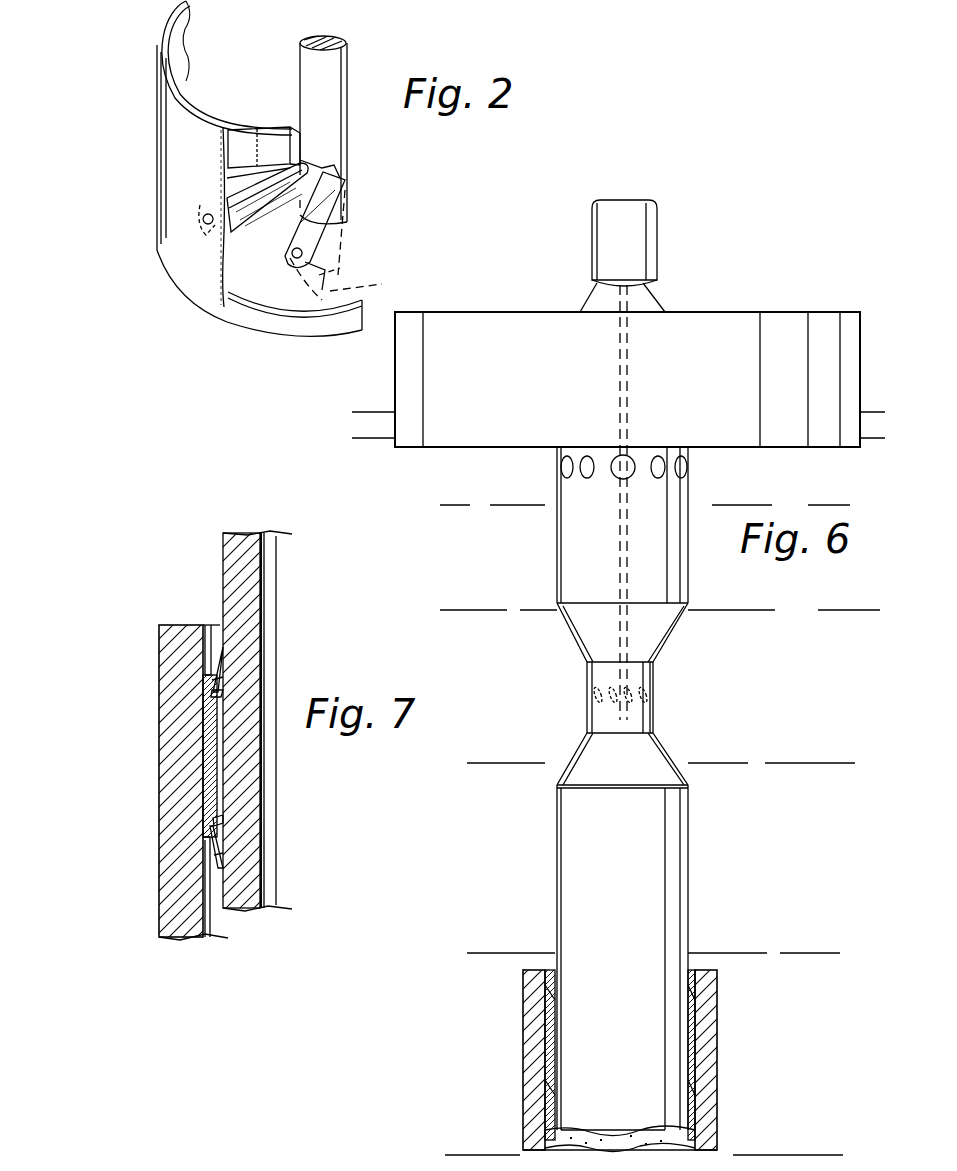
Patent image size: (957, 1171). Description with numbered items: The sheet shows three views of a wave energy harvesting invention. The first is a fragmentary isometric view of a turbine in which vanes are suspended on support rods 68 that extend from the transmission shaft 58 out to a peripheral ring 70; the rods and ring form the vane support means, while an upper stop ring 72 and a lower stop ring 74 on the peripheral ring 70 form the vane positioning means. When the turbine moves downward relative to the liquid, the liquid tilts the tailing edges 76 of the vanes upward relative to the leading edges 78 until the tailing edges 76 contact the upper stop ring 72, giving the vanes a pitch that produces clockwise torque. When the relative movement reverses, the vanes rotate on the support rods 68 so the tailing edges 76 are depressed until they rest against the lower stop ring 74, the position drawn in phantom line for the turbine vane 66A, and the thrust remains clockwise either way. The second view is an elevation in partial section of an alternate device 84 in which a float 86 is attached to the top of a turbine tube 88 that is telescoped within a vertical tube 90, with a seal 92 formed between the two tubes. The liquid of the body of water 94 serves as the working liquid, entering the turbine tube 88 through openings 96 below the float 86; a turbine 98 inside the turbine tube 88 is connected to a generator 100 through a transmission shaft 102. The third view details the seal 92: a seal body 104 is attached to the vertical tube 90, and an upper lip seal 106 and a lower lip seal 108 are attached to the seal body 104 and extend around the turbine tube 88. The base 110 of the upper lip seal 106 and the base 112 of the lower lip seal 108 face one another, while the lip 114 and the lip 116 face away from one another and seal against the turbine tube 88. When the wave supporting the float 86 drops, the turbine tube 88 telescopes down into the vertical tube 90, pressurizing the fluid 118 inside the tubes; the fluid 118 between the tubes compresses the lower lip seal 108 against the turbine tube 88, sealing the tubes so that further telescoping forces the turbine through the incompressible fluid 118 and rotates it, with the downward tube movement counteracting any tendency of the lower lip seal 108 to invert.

In FIG. 2, the transmission shaft 58 is at (340, 64).
In FIG. 2, the turbine vane (phantom position) 66A is at (343, 238).
In FIG. 2, the support rods 68 is at (320, 163).
In FIG. 2, the peripheral ring 70 is at (193, 292).
In FIG. 2, the upper stop ring 72 is at (238, 138).
In FIG. 2, the lower stop ring 74 is at (323, 322).
In FIG. 2, the tailing edges 76 is at (287, 127).
In FIG. 2, the leading edges 78 is at (327, 267).
In FIG. 6, the wave energy harvesting device 84 is at (770, 300).
In FIG. 6, the float 86 is at (532, 386).
In FIG. 6, the turbine tube 88 is at (690, 566).
In FIG. 7, the turbine tube 88 is at (250, 581).
In FIG. 6, the vertical tube 90 is at (717, 1052).
In FIG. 7, the vertical tube 90 is at (172, 880).
In FIG. 6, the seal 92 is at (550, 1025).
In FIG. 7, the seal 92 is at (186, 610).
In FIG. 6, the body of water 94 is at (844, 652).
In FIG. 6, the openings 96 is at (690, 473).
In FIG. 6, the turbine 98 is at (650, 693).
In FIG. 6, the generator 100 is at (645, 240).
In FIG. 6, the transmission shaft 102 is at (630, 383).
In FIG. 7, the seal body 104 is at (207, 720).
In FIG. 7, the upper lip seal 106 is at (212, 678).
In FIG. 7, the lower lip seal 108 is at (215, 840).
In FIG. 7, the base of upper lip seal 110 is at (212, 690).
In FIG. 7, the base of lower lip seal 112 is at (218, 818).
In FIG. 7, the lip of upper lip seal 114 is at (218, 650).
In FIG. 7, the lip of lower lip seal 116 is at (218, 862).
In FIG. 6, the fluid 118 is at (585, 1138).